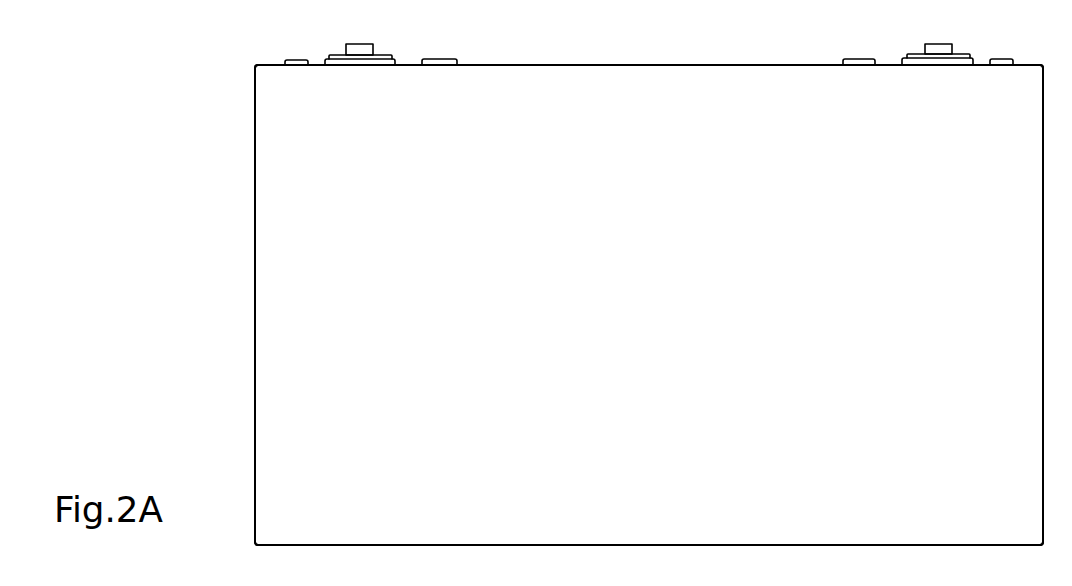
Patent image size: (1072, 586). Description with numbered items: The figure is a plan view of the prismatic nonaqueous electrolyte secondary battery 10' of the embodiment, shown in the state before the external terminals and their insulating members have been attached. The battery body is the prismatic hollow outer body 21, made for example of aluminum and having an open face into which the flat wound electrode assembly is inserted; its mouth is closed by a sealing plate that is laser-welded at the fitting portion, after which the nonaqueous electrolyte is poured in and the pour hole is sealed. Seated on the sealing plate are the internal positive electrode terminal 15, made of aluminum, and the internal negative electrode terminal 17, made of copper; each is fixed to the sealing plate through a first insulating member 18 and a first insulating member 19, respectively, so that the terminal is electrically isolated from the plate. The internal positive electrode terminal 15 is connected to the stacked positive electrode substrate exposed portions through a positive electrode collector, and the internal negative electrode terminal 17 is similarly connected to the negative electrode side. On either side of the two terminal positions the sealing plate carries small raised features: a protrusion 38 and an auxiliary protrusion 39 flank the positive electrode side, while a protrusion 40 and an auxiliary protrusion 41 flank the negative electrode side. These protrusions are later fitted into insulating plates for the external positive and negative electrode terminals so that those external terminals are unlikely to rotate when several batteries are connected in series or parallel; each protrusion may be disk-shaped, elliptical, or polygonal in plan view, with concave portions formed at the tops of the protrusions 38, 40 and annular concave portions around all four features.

The prismatic nonaqueous electrolyte secondary battery 10' is at (608, 295).
The prismatic hollow outer body 21 is at (318, 253).
The internal positive electrode terminal 15 is at (932, 48).
The internal negative electrode terminal 17 is at (357, 50).
The first insulating member 18 is at (962, 62).
The first insulating member 19 is at (383, 61).
The protrusion 38 is at (857, 59).
The auxiliary protrusion 39 is at (1005, 58).
The protrusion 40 is at (447, 58).
The auxiliary protrusion 41 is at (291, 58).